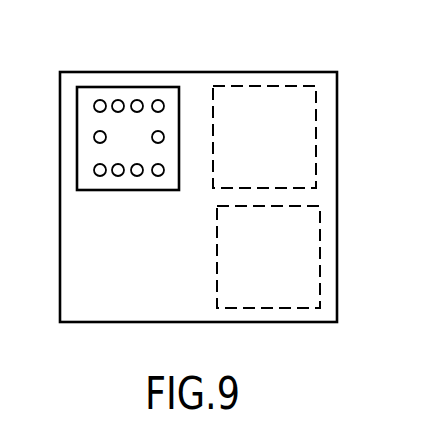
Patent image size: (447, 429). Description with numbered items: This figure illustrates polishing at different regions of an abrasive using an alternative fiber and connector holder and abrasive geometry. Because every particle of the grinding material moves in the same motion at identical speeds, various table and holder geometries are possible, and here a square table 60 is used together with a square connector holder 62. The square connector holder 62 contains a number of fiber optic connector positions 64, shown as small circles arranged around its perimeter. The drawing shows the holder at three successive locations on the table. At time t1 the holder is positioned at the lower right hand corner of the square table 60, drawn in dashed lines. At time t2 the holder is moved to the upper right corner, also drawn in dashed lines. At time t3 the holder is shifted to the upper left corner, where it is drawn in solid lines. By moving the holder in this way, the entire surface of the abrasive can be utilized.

The square table 60 is at (337, 307).
The square connector holder 62 is at (163, 83).
The fiber optic connector positions 64 is at (115, 99).
The time t1 is at (318, 272).
The time t2 is at (315, 122).
The time t3 is at (77, 130).